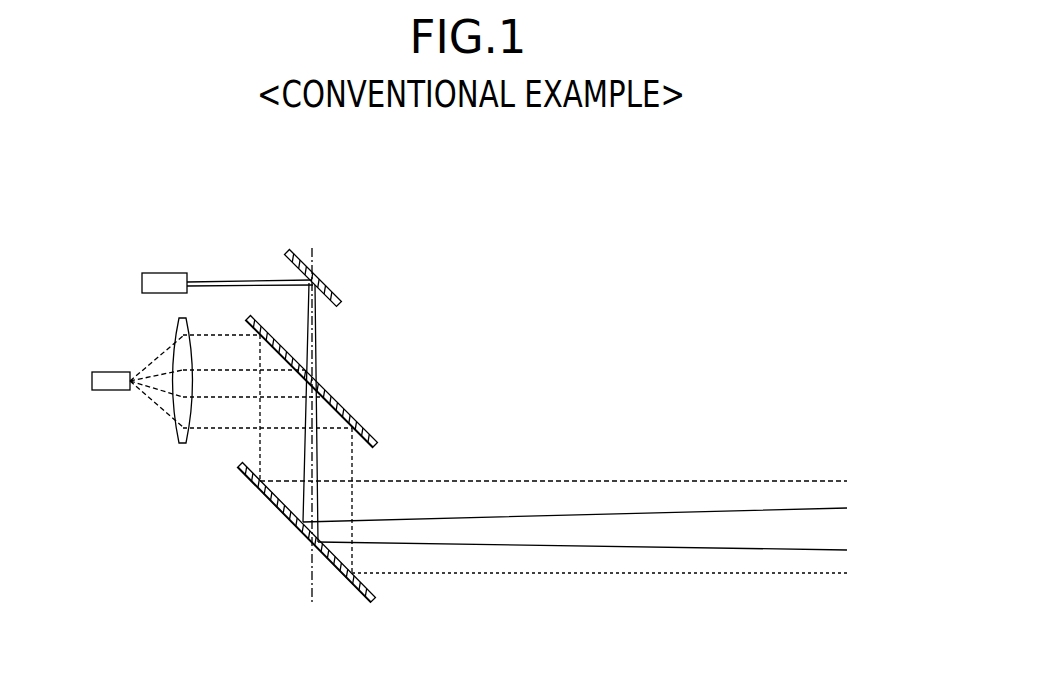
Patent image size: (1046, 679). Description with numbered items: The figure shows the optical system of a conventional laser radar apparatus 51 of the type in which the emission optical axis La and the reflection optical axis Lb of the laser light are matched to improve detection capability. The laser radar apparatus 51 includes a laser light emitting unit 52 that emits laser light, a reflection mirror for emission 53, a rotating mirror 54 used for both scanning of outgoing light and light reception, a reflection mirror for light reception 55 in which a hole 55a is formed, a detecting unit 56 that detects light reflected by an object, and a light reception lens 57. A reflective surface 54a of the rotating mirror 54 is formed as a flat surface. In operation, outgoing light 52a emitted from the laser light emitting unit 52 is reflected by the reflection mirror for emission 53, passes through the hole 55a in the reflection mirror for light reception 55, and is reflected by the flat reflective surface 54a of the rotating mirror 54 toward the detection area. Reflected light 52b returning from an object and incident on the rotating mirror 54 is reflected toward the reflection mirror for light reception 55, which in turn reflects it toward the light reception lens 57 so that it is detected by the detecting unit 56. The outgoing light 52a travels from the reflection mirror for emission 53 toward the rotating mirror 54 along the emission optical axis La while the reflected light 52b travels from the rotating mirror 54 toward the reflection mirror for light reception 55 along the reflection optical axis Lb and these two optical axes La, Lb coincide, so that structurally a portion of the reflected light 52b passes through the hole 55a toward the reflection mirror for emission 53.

The laser radar apparatus 51 is at (264, 194).
The laser light emitting unit 52 is at (165, 273).
The outgoing light 52a is at (319, 464).
The reflected light 52b is at (578, 481).
The reflection mirror for emission 53 is at (333, 306).
The rotating mirror 54 is at (239, 466).
The reflective surface 54a is at (374, 592).
The reflection mirror for light reception 55 is at (372, 432).
The hole 55a is at (322, 383).
The detecting unit 56 is at (110, 372).
The light reception lens 57 is at (178, 323).
The emitted light beams La, Lb is at (313, 508).